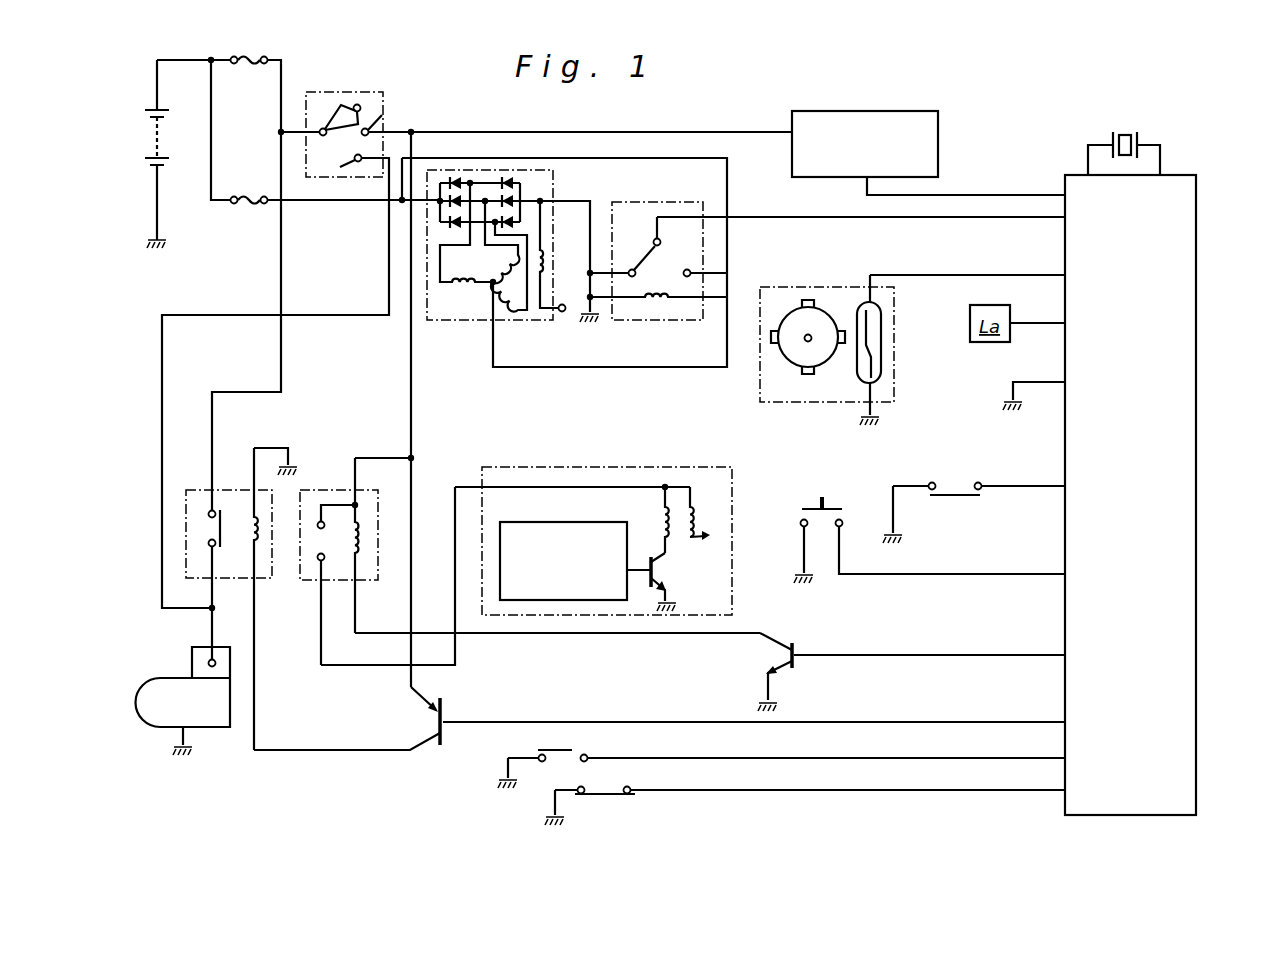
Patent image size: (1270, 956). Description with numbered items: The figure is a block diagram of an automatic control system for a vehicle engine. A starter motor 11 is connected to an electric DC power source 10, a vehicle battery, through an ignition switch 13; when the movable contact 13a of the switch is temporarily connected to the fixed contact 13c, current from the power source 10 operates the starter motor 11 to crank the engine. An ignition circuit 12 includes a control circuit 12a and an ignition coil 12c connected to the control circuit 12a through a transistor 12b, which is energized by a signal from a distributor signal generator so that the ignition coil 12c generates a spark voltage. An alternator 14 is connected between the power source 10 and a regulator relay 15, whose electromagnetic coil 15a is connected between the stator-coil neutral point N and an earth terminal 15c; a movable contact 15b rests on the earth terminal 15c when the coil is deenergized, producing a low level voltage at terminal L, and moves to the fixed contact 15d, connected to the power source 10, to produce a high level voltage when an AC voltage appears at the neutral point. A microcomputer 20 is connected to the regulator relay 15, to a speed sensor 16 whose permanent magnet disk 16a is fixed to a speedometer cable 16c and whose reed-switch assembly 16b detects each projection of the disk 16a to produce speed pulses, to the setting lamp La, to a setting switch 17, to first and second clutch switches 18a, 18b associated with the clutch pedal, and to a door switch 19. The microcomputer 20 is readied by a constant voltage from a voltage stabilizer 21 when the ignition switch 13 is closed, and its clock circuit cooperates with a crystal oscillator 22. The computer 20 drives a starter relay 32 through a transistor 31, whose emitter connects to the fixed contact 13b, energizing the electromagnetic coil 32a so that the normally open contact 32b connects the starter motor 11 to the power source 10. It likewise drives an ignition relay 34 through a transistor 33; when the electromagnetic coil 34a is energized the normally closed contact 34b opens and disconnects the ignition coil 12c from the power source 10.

The electric DC power source 10 is at (148, 137).
The starter motor 11 is at (183, 701).
The ignition circuit 12 is at (607, 520).
The control circuit 12a is at (547, 522).
The transistor 12b is at (663, 570).
The ignition coil 12c is at (695, 512).
The ignition switch 13 is at (355, 112).
The movable contact 13a is at (338, 115).
The fixed contact 13b is at (393, 121).
The fixed contact 13c is at (348, 166).
The alternator 14 is at (478, 316).
The regulator relay 15 is at (657, 262).
The electromagnetic coil 15a is at (655, 307).
The movable contact 15b is at (653, 248).
The earth terminal 15c is at (638, 277).
The fixed contact 15d is at (690, 250).
The speed sensor 16 is at (879, 333).
The disk 16a is at (797, 346).
The reed-switch assembly 16b is at (877, 343).
The speedometer cable 16c is at (812, 343).
The setting switch 17 is at (828, 505).
The first clutch switch 18a is at (575, 749).
The second clutch switch 18b is at (607, 793).
The door switch 19 is at (960, 495).
The microcomputer 20 is at (1200, 290).
The voltage stabilizer 21 is at (912, 111).
The crystal oscillator 22 is at (1130, 132).
The transistor 31 is at (444, 716).
The starter relay 32 is at (196, 599).
The electromagnetic coil 32a is at (238, 599).
The normally open contact 32b is at (212, 527).
The transistor 33 is at (796, 650).
The ignition relay 34 is at (350, 561).
The electromagnetic coil 34a is at (360, 552).
The normally closed contact 34b is at (318, 521).